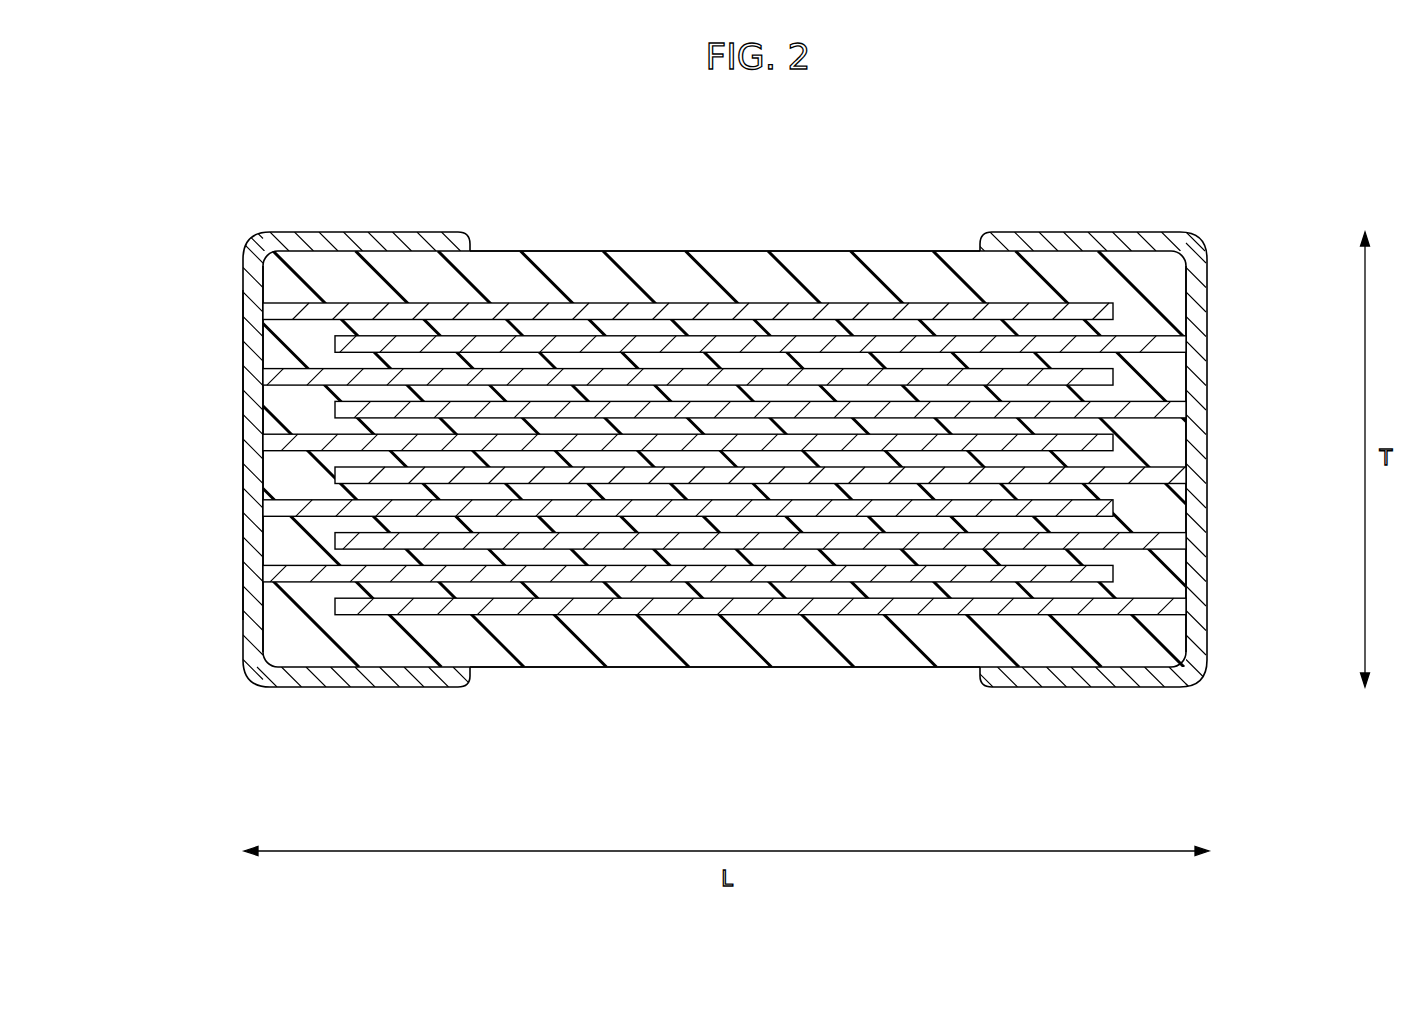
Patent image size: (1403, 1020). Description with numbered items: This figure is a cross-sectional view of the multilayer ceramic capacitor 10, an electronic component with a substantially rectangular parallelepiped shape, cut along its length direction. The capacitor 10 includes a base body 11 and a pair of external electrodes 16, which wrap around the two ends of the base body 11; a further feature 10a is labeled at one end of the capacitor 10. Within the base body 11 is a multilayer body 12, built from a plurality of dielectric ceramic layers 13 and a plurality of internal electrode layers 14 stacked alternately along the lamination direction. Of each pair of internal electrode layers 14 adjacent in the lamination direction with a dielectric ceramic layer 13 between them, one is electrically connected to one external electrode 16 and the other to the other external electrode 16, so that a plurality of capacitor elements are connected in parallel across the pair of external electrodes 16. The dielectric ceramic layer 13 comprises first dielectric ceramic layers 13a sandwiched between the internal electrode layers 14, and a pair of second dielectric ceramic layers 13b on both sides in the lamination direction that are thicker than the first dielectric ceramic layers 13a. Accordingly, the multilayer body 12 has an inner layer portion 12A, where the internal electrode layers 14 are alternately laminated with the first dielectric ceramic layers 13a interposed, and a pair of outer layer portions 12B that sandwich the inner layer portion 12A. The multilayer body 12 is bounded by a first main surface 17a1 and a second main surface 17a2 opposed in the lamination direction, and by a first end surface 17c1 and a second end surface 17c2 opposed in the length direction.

The multilayer ceramic capacitor 10 is at (1160, 172).
The end portion of capacitor 10a is at (218, 336).
The base body 11 is at (939, 220).
The multilayer body 12 is at (630, 190).
The inner layer portion 12A is at (567, 287).
The outer layer portion 12B is at (870, 228).
The dielectric ceramic layer 13 is at (650, 272).
The first dielectric ceramic layer 13a is at (715, 588).
The second dielectric ceramic layer 13b is at (805, 282).
The internal electrode layer 14 is at (733, 303).
The external electrode 16 is at (247, 488).
The first main surface 17a1 is at (785, 248).
The second main surface 17a2 is at (772, 668).
The first end surface 17c1 is at (1187, 379).
The second end surface 17c2 is at (250, 411).